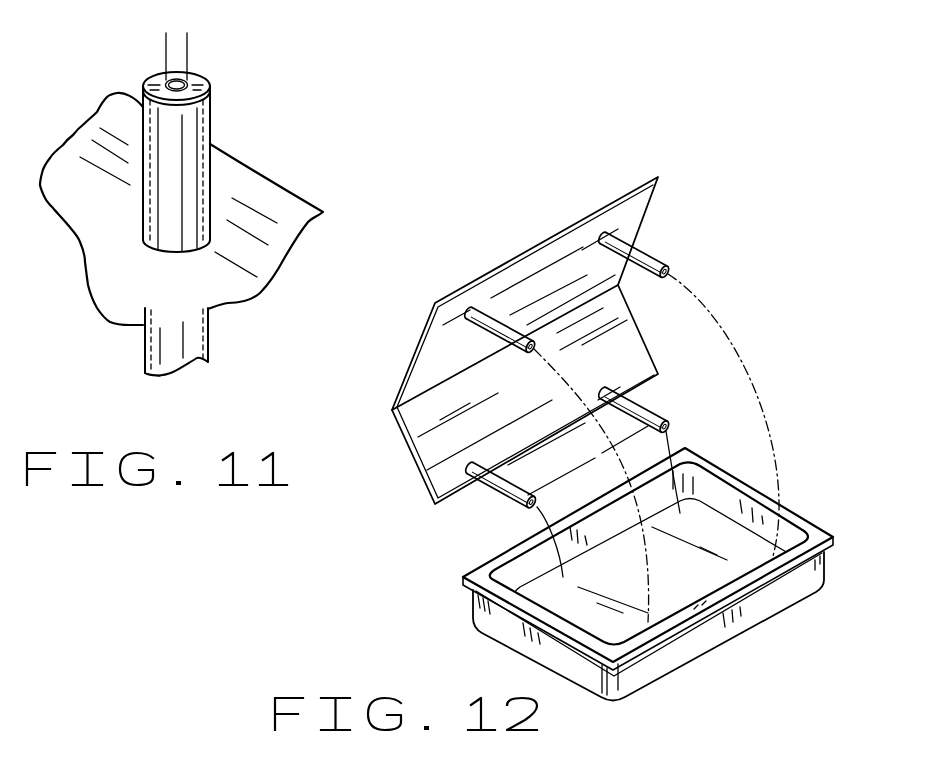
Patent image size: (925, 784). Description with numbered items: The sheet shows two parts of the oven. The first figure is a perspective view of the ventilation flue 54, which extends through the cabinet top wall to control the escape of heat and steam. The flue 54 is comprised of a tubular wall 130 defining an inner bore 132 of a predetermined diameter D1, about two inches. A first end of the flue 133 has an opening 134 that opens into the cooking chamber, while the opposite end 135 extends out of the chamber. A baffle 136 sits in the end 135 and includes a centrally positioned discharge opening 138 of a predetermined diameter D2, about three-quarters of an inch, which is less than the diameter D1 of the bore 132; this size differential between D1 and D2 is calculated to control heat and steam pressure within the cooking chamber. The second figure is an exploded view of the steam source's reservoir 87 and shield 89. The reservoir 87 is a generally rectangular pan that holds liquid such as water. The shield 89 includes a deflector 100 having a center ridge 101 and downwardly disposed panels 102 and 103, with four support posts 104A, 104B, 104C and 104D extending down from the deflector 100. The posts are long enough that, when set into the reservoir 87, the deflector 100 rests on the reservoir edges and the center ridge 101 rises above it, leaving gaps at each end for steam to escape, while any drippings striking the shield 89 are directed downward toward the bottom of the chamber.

In FIG. 11, the ventilation flue 54 is at (220, 101).
In FIG. 11, the tubular wall 130 is at (211, 128).
In FIG. 11, the inner bore 132 is at (148, 133).
In FIG. 11, the first end of the flue 133 is at (195, 362).
In FIG. 11, the opening 134 is at (176, 376).
In FIG. 11, the opposite end 135 is at (213, 88).
In FIG. 11, the baffle 136 is at (152, 81).
In FIG. 11, the discharge opening 138 is at (166, 81).
In FIG. 11, the diameter of the inner bore D1 is at (202, 183).
In FIG. 11, the diameter of the discharge opening D2 is at (130, 45).
In FIG. 12, the shield 89 is at (562, 224).
In FIG. 12, the deflector 100 is at (537, 279).
In FIG. 12, the center ridge 101 is at (422, 402).
In FIG. 12, the downwardly disposed panel 102 is at (533, 422).
In FIG. 12, the downwardly disposed panel 103 is at (446, 322).
In FIG. 12, the support post 104A is at (473, 331).
In FIG. 12, the support post 104B is at (652, 257).
In FIG. 12, the support post 104C is at (648, 405).
In FIG. 12, the support post 104D is at (503, 495).
In FIG. 12, the reservoir 87 is at (753, 607).